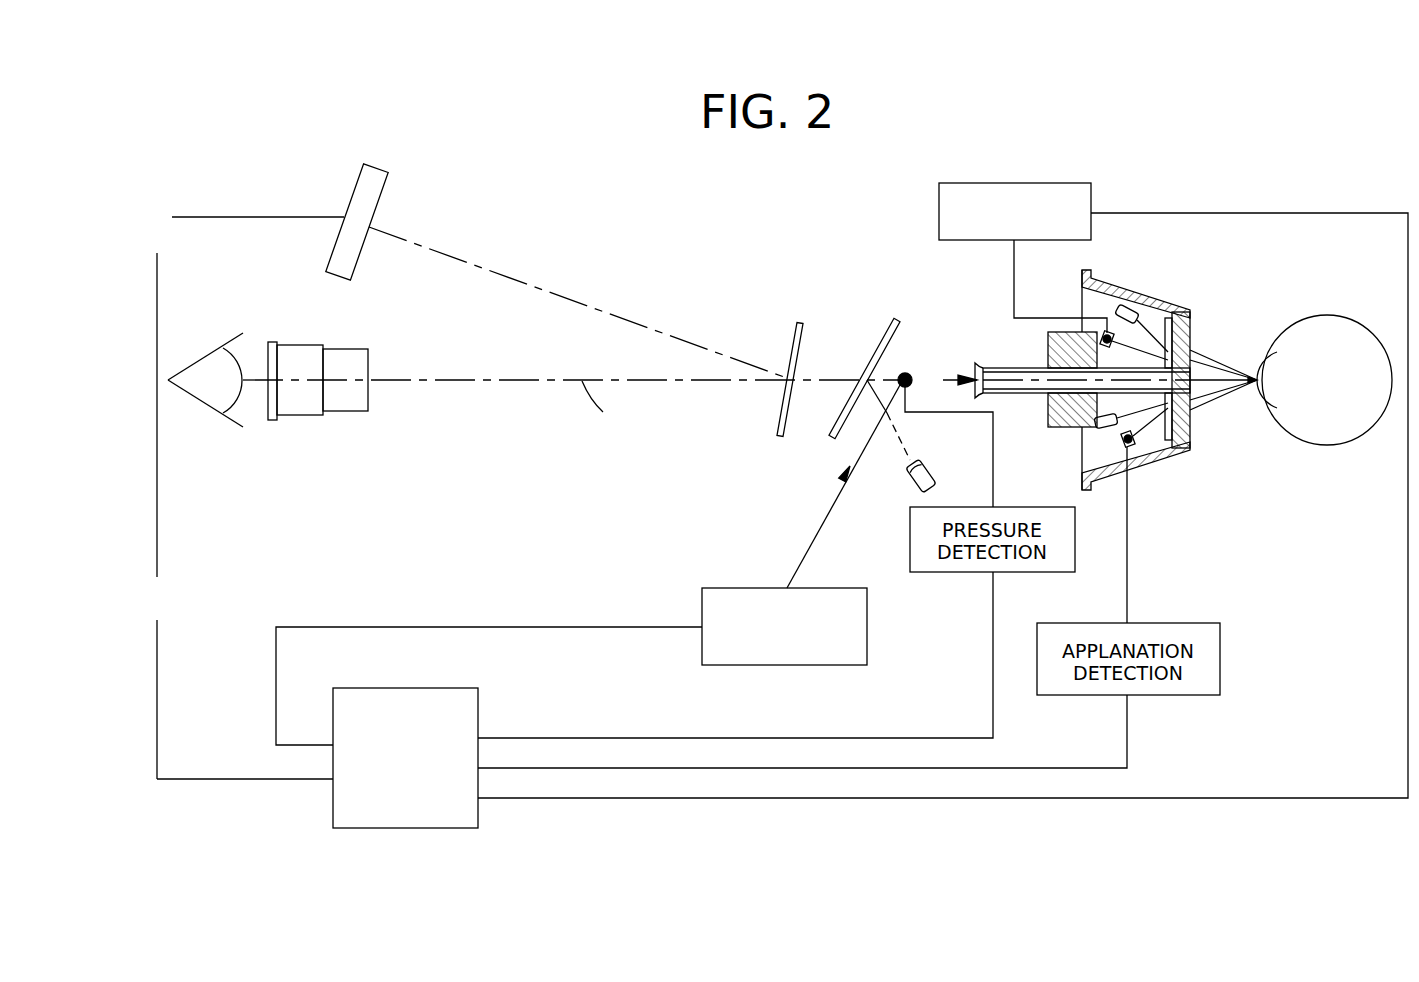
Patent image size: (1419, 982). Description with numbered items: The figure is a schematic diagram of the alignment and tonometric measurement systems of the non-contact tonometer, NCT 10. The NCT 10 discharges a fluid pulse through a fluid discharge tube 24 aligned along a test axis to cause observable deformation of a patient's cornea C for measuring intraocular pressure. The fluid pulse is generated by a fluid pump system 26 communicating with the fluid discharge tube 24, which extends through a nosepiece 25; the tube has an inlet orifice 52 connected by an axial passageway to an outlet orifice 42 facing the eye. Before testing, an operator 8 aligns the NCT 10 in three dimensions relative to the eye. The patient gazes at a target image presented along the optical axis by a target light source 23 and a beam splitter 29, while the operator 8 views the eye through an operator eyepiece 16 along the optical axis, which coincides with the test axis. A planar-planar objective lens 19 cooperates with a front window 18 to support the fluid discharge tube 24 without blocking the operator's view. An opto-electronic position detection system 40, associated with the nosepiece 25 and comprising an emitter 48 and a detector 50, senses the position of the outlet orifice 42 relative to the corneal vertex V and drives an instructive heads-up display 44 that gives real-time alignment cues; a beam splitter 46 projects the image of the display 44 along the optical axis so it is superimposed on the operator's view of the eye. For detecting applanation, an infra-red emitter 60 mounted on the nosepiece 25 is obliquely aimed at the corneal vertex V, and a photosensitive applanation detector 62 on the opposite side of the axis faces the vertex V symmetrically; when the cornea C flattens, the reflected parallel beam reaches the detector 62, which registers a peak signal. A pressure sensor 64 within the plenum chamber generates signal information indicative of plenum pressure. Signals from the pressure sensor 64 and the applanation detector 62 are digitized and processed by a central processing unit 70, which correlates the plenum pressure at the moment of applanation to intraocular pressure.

The NCT 10 is at (504, 125).
The operator 8 is at (200, 400).
The operator eyepiece 16 is at (297, 413).
The instructive heads up display 44 is at (380, 200).
The beam splitter 46 is at (792, 348).
The beam splitter 29 is at (887, 332).
The pressure sensor 64 is at (905, 373).
The inlet orifice 52 is at (975, 375).
The fluid discharge tube 24 is at (1040, 366).
The planar-planar objective lens 19 is at (1048, 402).
The nosepiece 25 is at (1107, 283).
The front window 18 is at (1193, 327).
The outlet orifice 42 is at (1193, 367).
The infra-red emitter 60 is at (1135, 307).
The detector 50 is at (1107, 343).
The emitter 48 is at (1107, 430).
The applanation detector 62 is at (1137, 445).
The corneal vertex V is at (1252, 387).
The cornea C is at (1277, 407).
The target light source 23 is at (907, 477).
The fluid pump system 26 is at (768, 665).
The opto-electronic position detection system 40 is at (930, 208).
The central processing unit 70 is at (413, 688).